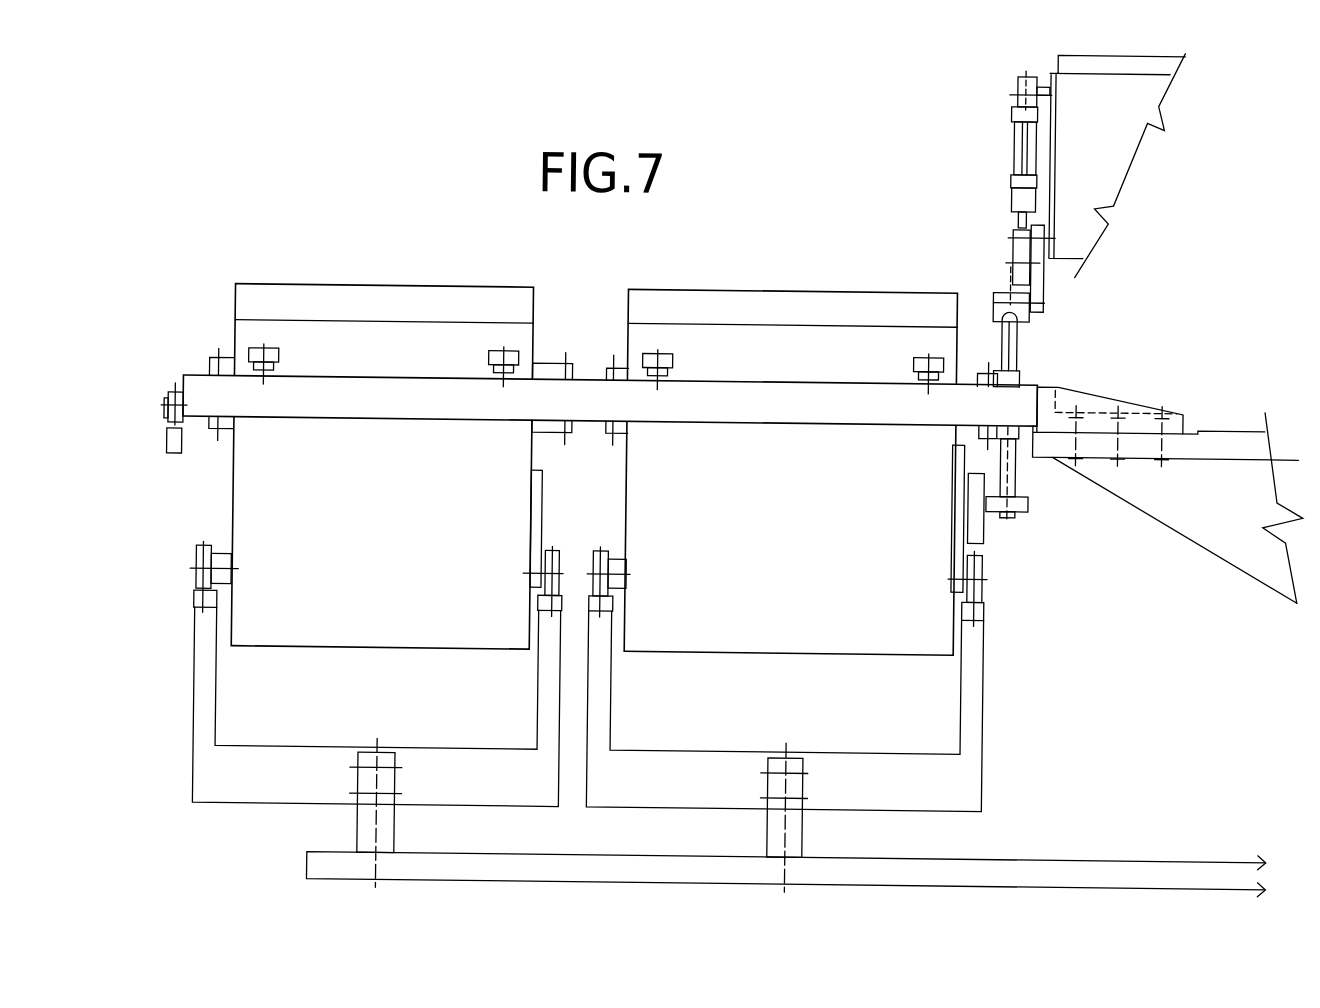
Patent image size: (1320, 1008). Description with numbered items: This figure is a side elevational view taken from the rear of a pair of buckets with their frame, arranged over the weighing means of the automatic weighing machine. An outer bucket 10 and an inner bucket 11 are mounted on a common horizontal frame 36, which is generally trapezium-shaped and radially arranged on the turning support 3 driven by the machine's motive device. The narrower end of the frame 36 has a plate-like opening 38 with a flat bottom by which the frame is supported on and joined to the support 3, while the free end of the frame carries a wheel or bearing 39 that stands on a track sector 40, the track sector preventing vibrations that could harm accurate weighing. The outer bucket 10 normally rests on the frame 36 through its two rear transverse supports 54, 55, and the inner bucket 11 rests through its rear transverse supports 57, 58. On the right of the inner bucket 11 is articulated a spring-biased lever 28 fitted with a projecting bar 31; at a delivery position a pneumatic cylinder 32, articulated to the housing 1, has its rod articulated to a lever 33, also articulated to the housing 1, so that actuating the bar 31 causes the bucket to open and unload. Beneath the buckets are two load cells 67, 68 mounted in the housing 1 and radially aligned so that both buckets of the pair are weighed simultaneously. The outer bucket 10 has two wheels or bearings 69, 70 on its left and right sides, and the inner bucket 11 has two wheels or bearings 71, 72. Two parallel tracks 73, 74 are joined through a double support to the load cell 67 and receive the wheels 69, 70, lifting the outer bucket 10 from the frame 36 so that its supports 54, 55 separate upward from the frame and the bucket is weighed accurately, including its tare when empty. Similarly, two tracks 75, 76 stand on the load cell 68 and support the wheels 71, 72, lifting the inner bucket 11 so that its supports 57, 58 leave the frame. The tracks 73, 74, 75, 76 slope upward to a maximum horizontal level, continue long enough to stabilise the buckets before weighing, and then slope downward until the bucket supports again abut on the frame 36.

The housing 1 is at (1106, 151).
The support 3 is at (1221, 438).
The outer bucket 10 is at (341, 298).
The inner bucket 11 is at (759, 300).
The lever 28 is at (978, 516).
The bar 31 is at (1010, 345).
The pneumatic cylinder 32 is at (1016, 141).
The lever 33 is at (1036, 278).
The horizontal frame 36 is at (361, 408).
The plate-like opening 38 is at (1086, 394).
The wheel or bearing 39 is at (171, 385).
The track sector 40 is at (173, 460).
The transverse support 54 is at (491, 360).
The transverse support 55 is at (266, 359).
The rear transverse support 57 is at (910, 364).
The rear transverse support 58 is at (658, 359).
The load cell 67 is at (392, 828).
The load cell 68 is at (799, 830).
The wheel or bearing 69 is at (203, 558).
The wheel or bearing 70 is at (549, 556).
The wheel or bearing 71 is at (598, 555).
The wheel or bearing 72 is at (976, 563).
The track 73 is at (197, 601).
The track 74 is at (541, 604).
The track 75 is at (606, 602).
The track 76 is at (983, 603).